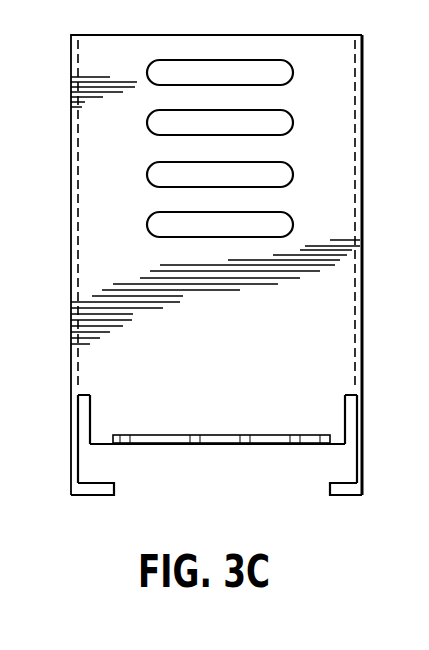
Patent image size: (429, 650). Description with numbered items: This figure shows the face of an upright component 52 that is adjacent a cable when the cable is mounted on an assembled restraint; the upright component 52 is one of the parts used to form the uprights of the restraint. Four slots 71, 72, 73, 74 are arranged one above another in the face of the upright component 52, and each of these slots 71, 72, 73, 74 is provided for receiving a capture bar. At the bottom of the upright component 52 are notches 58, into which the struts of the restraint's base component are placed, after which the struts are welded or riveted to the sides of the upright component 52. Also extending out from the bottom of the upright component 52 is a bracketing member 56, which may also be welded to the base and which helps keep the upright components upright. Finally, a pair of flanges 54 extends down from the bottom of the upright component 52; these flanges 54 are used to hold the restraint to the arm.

The upright component 52 is at (68, 504).
The flanges 54 is at (115, 490).
The bracketing member 56 is at (277, 435).
The notches 58 is at (92, 408).
The slot 71 is at (293, 72).
The slot 72 is at (293, 123).
The slot 73 is at (293, 174).
The slot 74 is at (293, 225).